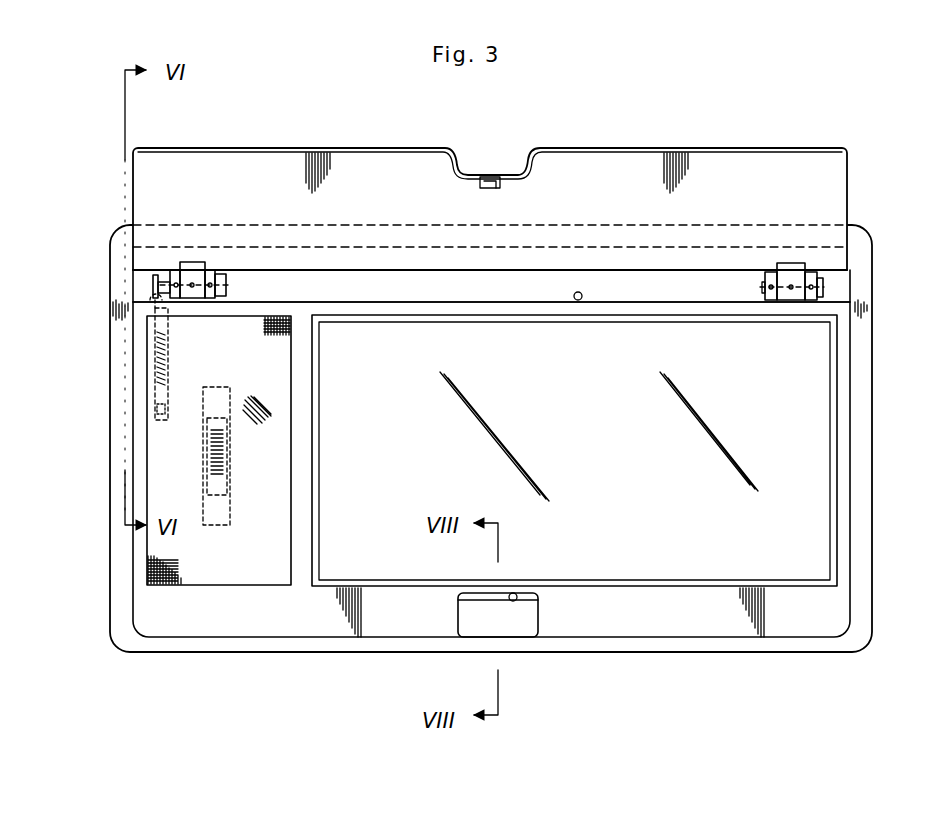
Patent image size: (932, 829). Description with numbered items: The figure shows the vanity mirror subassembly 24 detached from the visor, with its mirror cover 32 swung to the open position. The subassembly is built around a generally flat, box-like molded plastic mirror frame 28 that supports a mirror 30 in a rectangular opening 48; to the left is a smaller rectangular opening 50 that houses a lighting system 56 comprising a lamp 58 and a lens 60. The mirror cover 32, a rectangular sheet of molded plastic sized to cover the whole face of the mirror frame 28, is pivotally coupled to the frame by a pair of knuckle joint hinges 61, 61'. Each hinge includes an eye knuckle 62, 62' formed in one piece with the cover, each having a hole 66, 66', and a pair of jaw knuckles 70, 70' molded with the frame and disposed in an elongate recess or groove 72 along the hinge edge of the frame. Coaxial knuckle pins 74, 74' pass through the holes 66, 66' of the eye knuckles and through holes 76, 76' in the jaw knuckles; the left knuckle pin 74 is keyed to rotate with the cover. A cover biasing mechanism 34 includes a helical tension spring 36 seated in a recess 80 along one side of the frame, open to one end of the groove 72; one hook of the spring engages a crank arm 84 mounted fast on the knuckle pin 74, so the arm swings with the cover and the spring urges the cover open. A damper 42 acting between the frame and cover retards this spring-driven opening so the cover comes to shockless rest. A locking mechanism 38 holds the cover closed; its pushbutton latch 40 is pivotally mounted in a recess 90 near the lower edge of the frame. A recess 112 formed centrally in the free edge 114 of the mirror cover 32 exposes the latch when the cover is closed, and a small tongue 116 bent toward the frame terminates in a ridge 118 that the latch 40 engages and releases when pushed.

The vanity mirror subassembly 24 is at (490, 394).
The mirror frame 28 is at (740, 654).
The mirror 30 is at (648, 465).
The mirror cover 32 is at (527, 179).
The cover biasing mechanism 34 is at (145, 345).
The helical tension spring 36 is at (152, 356).
The locking mechanism 38 is at (526, 642).
The pushbutton latch 40 is at (540, 622).
The damper 42 is at (228, 285).
The opening 48 is at (787, 582).
The opening 50 is at (225, 582).
The lighting system 56 is at (180, 596).
The lamp 58 is at (229, 456).
The lens 60 is at (258, 570).
The knuckle joint hinge 61 is at (159, 266).
The knuckle joint hinge 61' is at (823, 278).
The eye knuckle 62 is at (207, 233).
The eye knuckle 62' is at (781, 240).
The hole 66 is at (209, 311).
The hole 66' is at (809, 233).
The jaw knuckles 70 is at (185, 248).
The jaw knuckles 70' is at (748, 331).
The recess or groove 72 is at (578, 300).
The knuckle pin 74 is at (112, 246).
The knuckle pin 74' is at (716, 290).
The holes 76 is at (215, 328).
The holes 76' is at (778, 234).
The recess 80 is at (152, 410).
The crank arm 84 is at (160, 285).
The recess 90 is at (514, 594).
The recess 112 is at (532, 148).
The free edge 114 is at (378, 146).
The tongue 116 is at (496, 190).
The ridge 118 is at (487, 174).